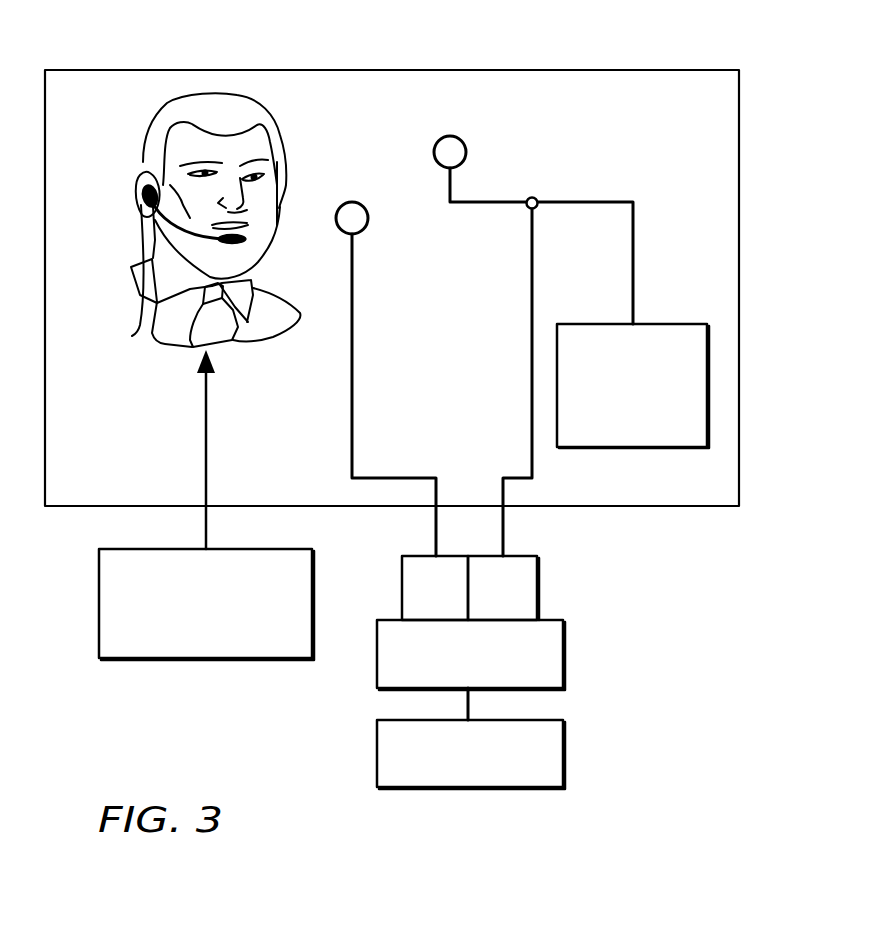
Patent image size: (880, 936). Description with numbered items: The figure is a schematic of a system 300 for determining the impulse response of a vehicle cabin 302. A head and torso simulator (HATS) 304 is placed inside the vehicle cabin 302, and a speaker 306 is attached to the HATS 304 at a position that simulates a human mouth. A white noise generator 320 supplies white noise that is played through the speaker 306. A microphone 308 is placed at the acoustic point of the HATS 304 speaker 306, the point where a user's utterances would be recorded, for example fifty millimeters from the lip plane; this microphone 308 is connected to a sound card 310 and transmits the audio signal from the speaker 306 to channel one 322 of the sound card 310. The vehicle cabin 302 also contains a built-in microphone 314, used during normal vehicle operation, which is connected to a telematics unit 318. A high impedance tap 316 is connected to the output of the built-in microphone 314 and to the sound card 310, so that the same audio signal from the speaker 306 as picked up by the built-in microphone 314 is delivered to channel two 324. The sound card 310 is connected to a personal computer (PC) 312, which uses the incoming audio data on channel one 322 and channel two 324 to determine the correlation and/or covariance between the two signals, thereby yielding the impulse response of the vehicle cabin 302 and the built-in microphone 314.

The system for determining vehicle cabin impulse response 300 is at (135, 58).
The vehicle cabin 302 is at (739, 107).
The head and torso simulator (HATS) 304 is at (150, 160).
The speaker 306 is at (246, 238).
The microphone 308 is at (368, 218).
The sound card 310 is at (471, 623).
The personal computer (PC) 312 is at (471, 738).
The built-in microphone 314 is at (466, 150).
The high impedance tap 316 is at (536, 199).
The telematics unit 318 is at (633, 386).
The white noise generator 320 is at (206, 505).
The channel one 322 is at (435, 588).
The channel two 324 is at (503, 588).